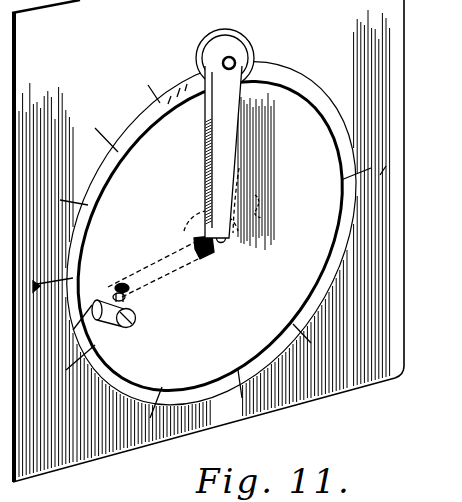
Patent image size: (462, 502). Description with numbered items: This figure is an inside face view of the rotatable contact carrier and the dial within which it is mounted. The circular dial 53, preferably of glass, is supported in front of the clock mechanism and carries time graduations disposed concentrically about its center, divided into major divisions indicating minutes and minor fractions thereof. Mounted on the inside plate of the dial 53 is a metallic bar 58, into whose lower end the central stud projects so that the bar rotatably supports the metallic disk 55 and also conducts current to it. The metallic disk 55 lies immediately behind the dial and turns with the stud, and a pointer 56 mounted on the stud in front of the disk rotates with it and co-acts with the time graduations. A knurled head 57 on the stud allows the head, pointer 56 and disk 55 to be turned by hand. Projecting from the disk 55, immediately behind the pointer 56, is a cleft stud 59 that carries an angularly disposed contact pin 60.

The circular dial 53 is at (208, 241).
The metallic disk 55 is at (318, 145).
The pointer 56 is at (173, 253).
The knurled head 57 is at (210, 231).
The metallic bar 58 is at (236, 170).
The cleft stud 59 is at (135, 322).
The contact pin 60 is at (125, 302).